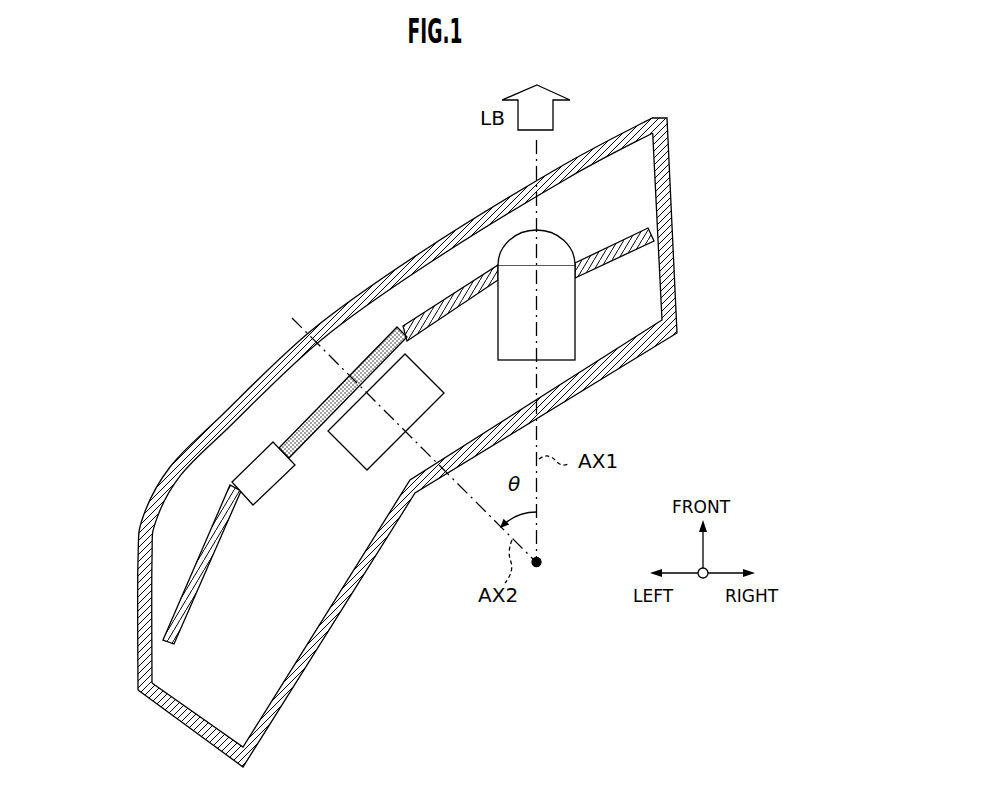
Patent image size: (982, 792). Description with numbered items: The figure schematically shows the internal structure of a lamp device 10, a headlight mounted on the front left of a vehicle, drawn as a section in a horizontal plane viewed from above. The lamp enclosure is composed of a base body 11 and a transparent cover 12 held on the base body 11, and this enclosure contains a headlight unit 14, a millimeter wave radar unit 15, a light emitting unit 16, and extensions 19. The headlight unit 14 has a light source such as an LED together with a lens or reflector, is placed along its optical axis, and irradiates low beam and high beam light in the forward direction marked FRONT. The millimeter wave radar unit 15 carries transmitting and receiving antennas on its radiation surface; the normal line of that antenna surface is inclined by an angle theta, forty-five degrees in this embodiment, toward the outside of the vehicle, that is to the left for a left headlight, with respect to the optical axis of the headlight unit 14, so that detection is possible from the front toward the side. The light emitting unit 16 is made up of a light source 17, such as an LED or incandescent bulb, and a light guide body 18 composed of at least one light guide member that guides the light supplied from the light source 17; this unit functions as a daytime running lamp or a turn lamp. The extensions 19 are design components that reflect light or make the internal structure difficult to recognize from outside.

The lamp device 10 is at (407, 442).
The base body 11 is at (337, 607).
The transparent cover 12 is at (399, 266).
The headlight unit 14 is at (577, 330).
The millimeter wave radar unit 15 is at (381, 457).
The light emitting unit 16 is at (282, 411).
The light source 17 is at (252, 461).
The light guide body 18 is at (325, 402).
The extension 19 is at (623, 238).